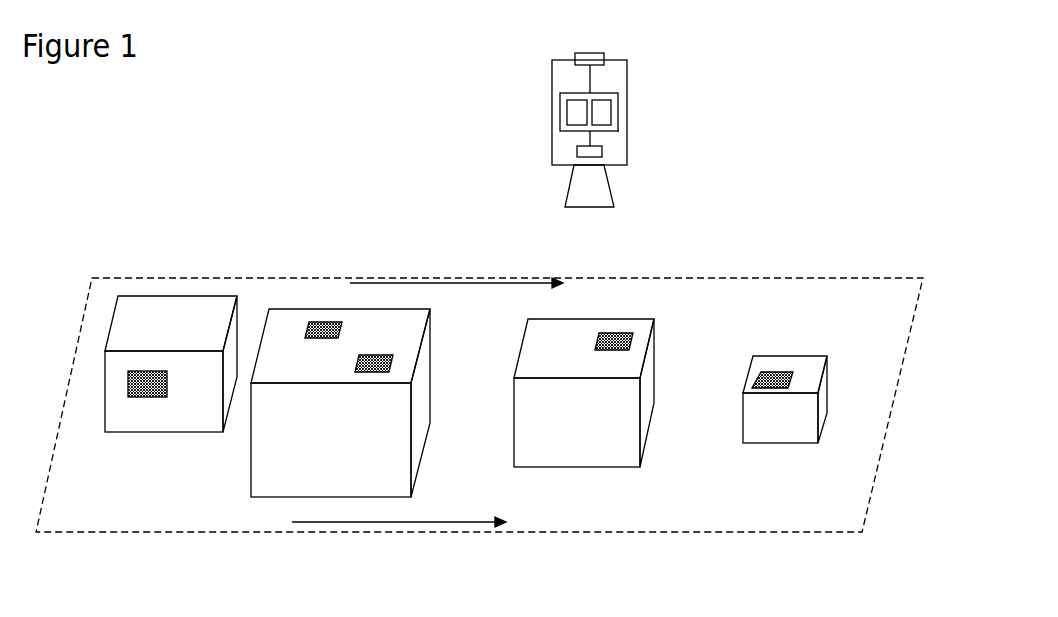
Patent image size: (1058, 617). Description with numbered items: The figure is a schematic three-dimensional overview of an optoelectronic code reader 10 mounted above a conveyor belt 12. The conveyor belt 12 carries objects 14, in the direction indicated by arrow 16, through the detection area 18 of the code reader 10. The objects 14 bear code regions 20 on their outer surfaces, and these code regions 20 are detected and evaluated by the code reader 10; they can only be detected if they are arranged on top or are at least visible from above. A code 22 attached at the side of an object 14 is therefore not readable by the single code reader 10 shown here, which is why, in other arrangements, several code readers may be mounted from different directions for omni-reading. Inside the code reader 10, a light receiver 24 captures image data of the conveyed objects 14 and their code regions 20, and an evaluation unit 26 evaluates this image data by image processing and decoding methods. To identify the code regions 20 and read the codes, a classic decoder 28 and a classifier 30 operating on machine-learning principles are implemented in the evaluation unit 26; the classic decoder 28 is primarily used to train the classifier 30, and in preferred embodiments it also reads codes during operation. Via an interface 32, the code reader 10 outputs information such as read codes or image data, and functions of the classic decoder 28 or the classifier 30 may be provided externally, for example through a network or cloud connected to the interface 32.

The optoelectronic code reader 10 is at (627, 62).
The conveyor belt 12 is at (830, 533).
The objects 14 is at (192, 408).
The arrow 16 is at (380, 523).
The detection area 18 is at (628, 265).
The code regions 20 is at (367, 356).
The code 22 is at (140, 387).
The light receiver 24 is at (578, 157).
The evaluation unit 26 is at (613, 133).
The classic decoder 28 is at (575, 115).
The classifier 30 is at (603, 115).
The interface 32 is at (585, 56).